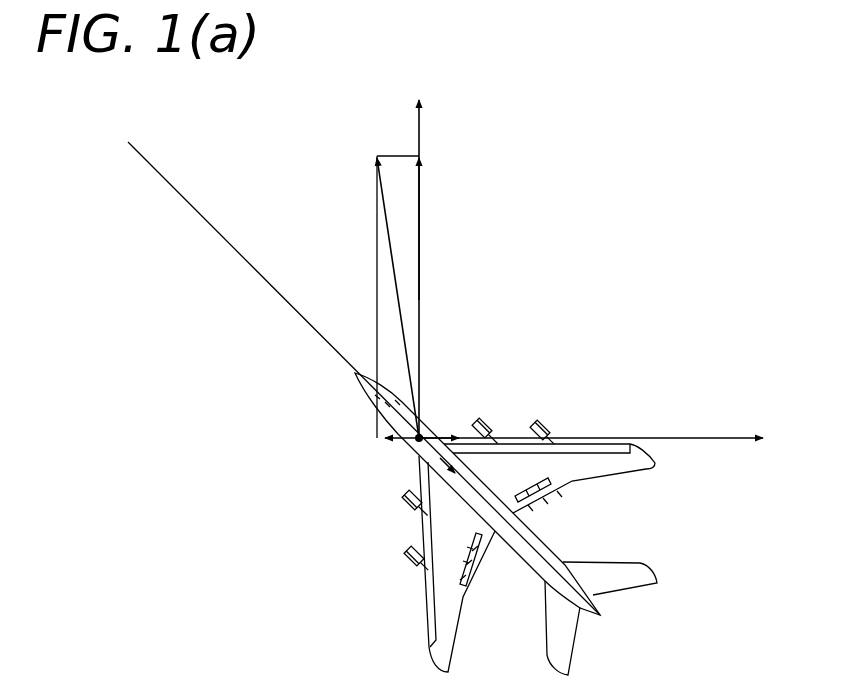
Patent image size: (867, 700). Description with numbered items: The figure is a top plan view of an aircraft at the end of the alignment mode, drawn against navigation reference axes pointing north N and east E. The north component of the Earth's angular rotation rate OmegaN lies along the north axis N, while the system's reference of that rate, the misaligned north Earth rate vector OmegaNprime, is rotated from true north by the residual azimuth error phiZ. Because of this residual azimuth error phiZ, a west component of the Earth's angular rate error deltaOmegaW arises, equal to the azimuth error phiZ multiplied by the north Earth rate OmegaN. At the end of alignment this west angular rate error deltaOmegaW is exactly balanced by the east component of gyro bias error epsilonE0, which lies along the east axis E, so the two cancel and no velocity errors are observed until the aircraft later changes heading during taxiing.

The north coordinate direction N is at (409, 256).
The east coordinate direction E is at (593, 420).
The north component of the Earth's angular rotation rate OmegaN is at (441, 148).
The Earth's angular rotation rate vector with azimuth error OmegaNprime is at (355, 150).
The residual azimuth error phiZ is at (360, 291).
The east component of gyro bias error epsilonE0 is at (428, 436).
The west component of the Earth's angular rate error deltaOmegaW is at (410, 445).